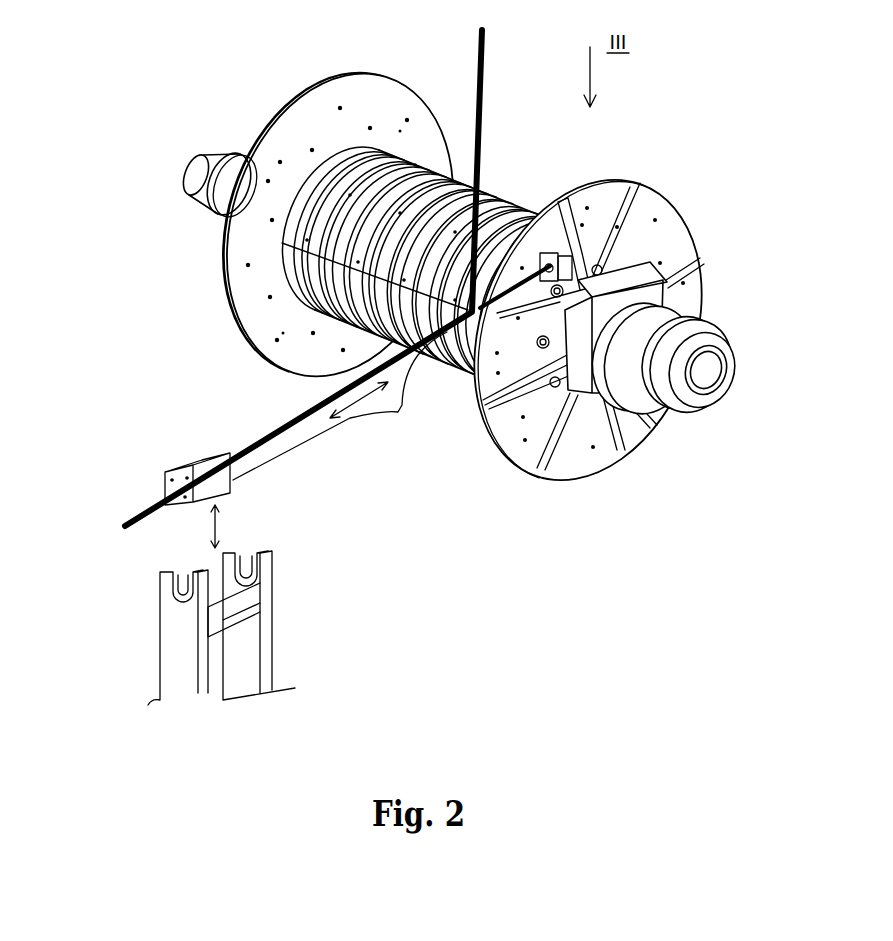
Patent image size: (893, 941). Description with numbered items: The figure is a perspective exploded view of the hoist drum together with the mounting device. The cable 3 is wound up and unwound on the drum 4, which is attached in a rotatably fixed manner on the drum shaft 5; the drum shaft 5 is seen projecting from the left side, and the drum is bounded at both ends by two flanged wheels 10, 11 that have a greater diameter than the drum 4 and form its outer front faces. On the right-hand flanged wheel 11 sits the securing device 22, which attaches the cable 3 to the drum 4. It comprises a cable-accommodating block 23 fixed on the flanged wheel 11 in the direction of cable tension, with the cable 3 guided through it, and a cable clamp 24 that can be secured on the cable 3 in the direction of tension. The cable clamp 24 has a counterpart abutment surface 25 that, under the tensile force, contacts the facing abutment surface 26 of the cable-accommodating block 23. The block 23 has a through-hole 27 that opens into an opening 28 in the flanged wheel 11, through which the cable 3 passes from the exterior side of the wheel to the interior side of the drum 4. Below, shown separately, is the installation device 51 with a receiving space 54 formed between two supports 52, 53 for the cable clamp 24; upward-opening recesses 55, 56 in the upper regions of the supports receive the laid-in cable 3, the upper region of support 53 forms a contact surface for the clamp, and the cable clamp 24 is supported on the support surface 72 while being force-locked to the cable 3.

The cable 3 is at (484, 124).
The drum 4 is at (408, 167).
The drum shaft 5 is at (214, 165).
The flanged wheel 10 is at (365, 107).
The flanged wheel 11 is at (670, 213).
The securing device 22 is at (340, 406).
The cable-accommodating block 23 is at (580, 222).
The cable clamp 24 is at (213, 480).
The counterpart abutment surface 25 is at (223, 443).
The abutment surface 26 is at (625, 235).
The through-hole 27 is at (547, 250).
The opening 28 is at (637, 253).
The installation device 51 is at (252, 655).
The support 52 is at (170, 633).
The support 53 is at (277, 595).
The receiving space 54 is at (217, 570).
The recess 55 is at (175, 577).
The recess 56 is at (245, 556).
The support surface 72 is at (268, 577).